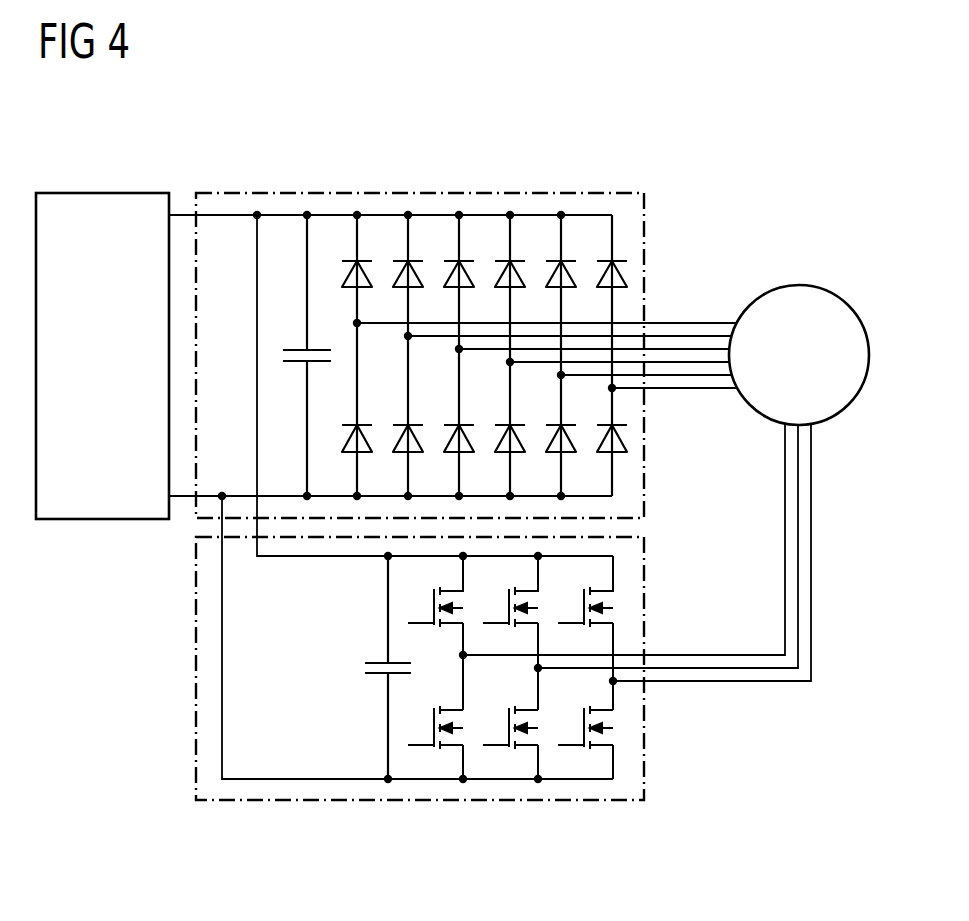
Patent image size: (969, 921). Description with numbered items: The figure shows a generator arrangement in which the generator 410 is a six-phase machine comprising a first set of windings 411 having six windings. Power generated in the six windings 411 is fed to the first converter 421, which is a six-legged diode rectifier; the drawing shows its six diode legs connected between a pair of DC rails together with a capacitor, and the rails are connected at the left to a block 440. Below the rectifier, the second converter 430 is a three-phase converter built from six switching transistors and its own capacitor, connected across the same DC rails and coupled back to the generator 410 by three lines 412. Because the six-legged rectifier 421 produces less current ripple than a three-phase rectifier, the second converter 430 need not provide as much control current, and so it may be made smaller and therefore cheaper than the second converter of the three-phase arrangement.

The battery / DC source 440 is at (103, 192).
The first converter 421 is at (431, 192).
The first set of windings 411 is at (685, 323).
The generator 410 is at (795, 285).
The motor phase lines 412 is at (812, 555).
The second converter 430 is at (196, 675).